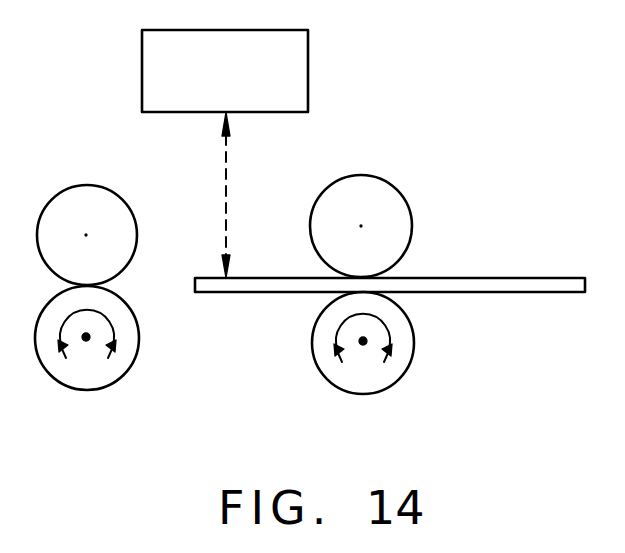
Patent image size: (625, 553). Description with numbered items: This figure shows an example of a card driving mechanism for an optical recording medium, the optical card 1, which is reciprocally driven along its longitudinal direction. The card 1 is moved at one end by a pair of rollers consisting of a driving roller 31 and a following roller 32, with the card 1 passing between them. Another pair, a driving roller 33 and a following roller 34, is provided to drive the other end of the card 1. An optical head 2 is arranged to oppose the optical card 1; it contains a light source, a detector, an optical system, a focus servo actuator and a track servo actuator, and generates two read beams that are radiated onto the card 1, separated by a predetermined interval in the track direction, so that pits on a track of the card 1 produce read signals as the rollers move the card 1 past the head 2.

The optical card 1 is at (533, 277).
The optical head 2 is at (308, 73).
The driving roller 31 is at (398, 363).
The following roller 32 is at (400, 217).
The driving roller 33 is at (125, 350).
The following roller 34 is at (122, 218).